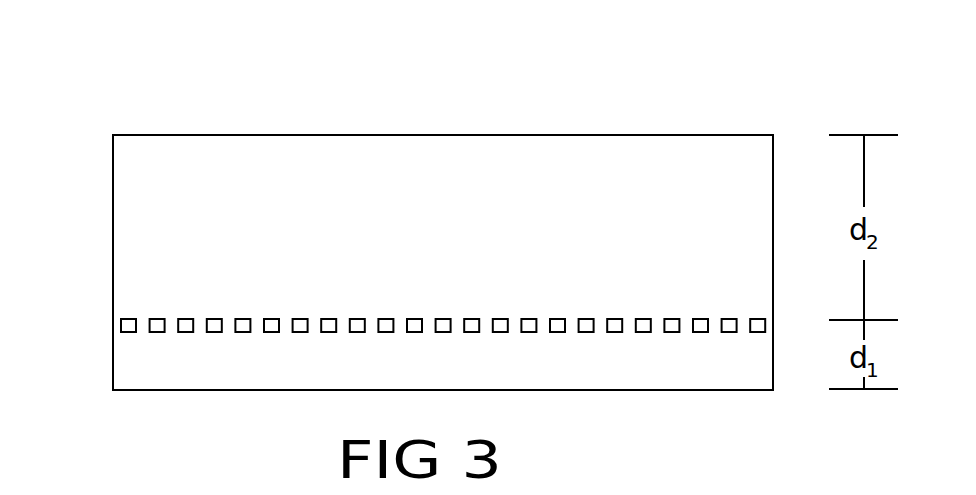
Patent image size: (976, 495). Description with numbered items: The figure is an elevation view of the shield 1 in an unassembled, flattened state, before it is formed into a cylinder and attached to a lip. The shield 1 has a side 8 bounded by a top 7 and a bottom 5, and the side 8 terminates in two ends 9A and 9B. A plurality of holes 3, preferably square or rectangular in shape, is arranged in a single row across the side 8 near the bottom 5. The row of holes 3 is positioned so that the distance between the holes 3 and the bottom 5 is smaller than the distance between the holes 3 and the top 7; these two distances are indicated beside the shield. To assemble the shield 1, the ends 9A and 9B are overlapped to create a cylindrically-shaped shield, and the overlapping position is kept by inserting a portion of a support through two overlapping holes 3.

The shield 1 is at (224, 93).
The holes 3 is at (178, 330).
The bottom 5 is at (625, 390).
The top 7 is at (410, 135).
The side 8 is at (432, 237).
The end 9A is at (113, 287).
The end 9B is at (773, 278).